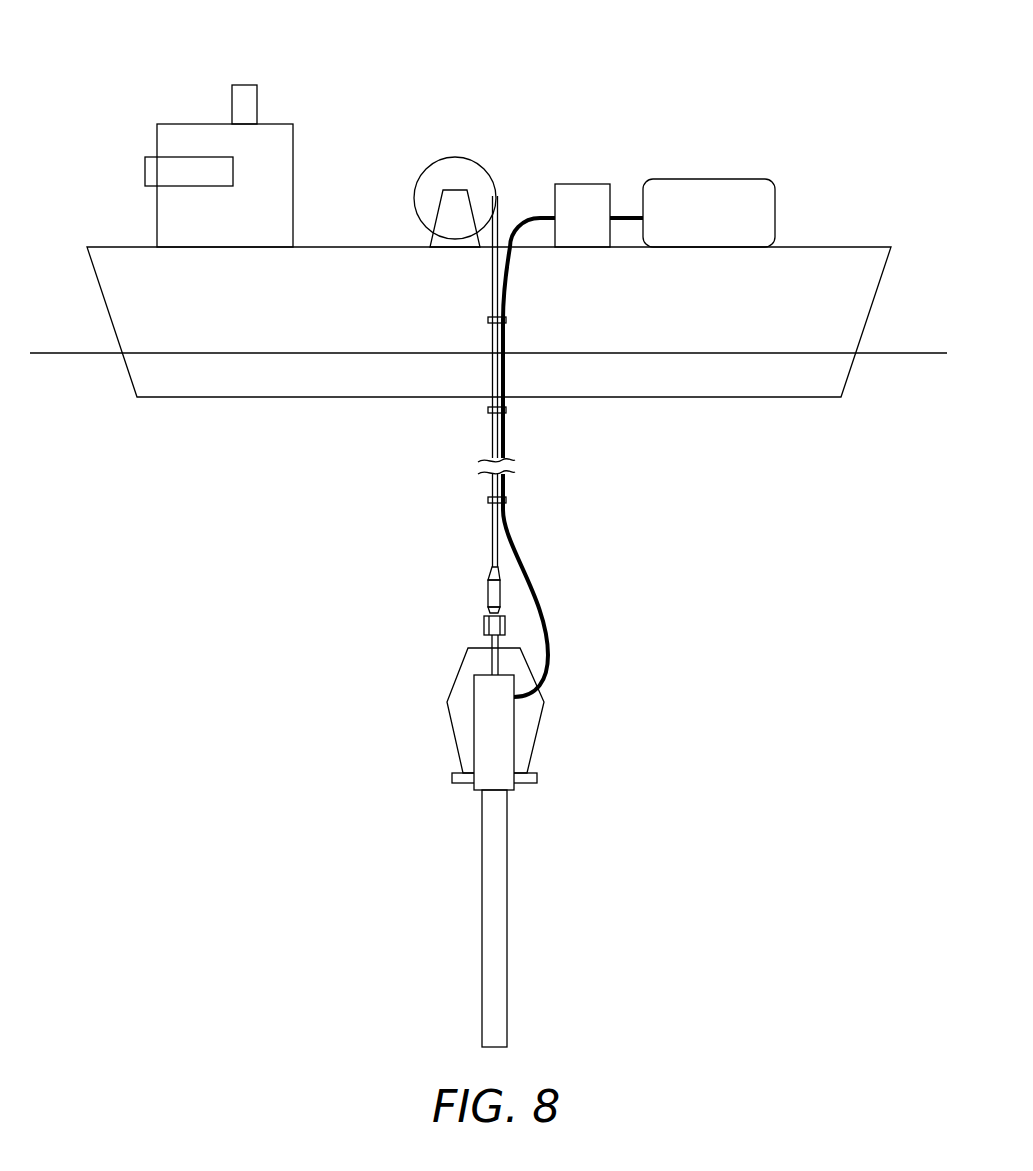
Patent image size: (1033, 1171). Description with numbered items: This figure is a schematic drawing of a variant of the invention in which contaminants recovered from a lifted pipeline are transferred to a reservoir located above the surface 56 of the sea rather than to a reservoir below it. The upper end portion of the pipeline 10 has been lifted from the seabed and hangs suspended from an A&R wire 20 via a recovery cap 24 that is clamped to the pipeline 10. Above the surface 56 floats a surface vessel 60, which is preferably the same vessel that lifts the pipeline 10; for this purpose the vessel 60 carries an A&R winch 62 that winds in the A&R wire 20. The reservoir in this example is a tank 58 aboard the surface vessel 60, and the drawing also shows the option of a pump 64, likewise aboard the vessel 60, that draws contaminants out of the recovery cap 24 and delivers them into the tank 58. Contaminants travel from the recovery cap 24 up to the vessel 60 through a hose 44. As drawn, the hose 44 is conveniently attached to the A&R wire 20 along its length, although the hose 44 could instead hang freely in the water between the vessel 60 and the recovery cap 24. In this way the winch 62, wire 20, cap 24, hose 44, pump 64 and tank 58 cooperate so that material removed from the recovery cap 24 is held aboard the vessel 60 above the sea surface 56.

The surface vessel 60 is at (131, 60).
The surface of the sea 56 is at (50, 353).
The A&R winch 62 is at (455, 157).
The pump 64 is at (580, 184).
The tank 58 is at (710, 179).
The hose 44 is at (550, 649).
The A&R wire 20 is at (490, 436).
The recovery cap 24 is at (444, 630).
The pipeline 10 is at (447, 921).